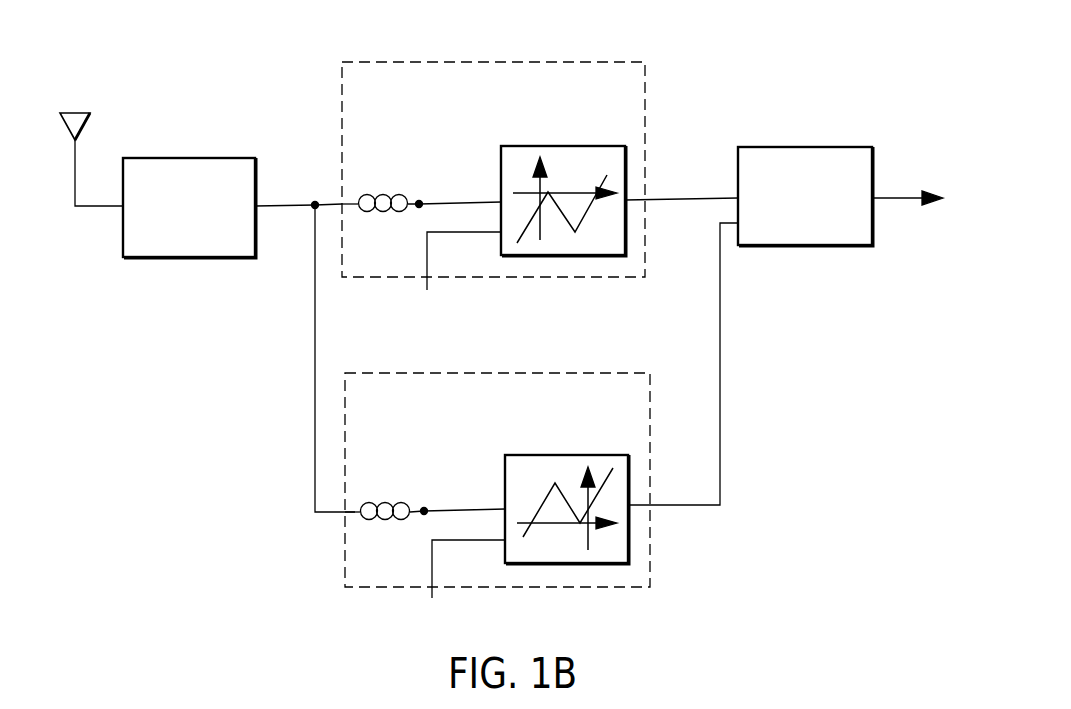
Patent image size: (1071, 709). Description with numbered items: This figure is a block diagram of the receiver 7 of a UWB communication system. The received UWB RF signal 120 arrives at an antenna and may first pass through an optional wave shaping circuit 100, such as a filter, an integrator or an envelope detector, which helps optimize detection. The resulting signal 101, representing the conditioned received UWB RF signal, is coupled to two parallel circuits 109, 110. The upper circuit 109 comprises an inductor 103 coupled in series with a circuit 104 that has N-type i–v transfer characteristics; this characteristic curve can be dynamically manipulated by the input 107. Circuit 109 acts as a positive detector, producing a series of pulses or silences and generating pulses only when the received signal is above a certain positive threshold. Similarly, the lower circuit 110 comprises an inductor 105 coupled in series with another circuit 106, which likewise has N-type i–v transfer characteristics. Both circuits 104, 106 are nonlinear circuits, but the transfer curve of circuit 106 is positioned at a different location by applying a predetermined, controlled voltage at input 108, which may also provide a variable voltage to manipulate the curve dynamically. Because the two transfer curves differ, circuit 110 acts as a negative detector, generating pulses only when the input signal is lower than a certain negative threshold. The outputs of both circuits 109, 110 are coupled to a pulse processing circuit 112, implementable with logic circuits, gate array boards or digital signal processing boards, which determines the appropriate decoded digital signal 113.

The receiver 7 is at (152, 498).
The received UWB RF signal 120 is at (78, 165).
The wave shaping circuit 100 is at (187, 258).
The conditioned received UWB RF signal 101 is at (285, 205).
The inductor 103 is at (406, 193).
The circuit 104 is at (555, 146).
The input 107 is at (456, 277).
The circuit 109 is at (608, 272).
The inductor 105 is at (405, 500).
The circuit 106 is at (585, 455).
The input 108 is at (460, 584).
The circuit 110 is at (612, 582).
The pulse processing circuit 112 is at (802, 147).
The decoded digital signal 113 is at (898, 192).